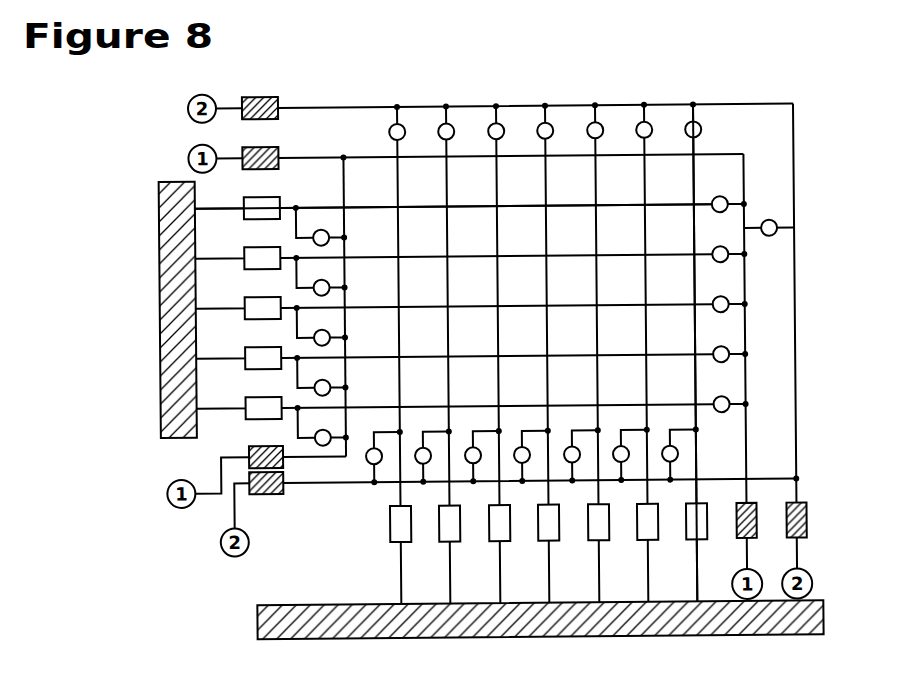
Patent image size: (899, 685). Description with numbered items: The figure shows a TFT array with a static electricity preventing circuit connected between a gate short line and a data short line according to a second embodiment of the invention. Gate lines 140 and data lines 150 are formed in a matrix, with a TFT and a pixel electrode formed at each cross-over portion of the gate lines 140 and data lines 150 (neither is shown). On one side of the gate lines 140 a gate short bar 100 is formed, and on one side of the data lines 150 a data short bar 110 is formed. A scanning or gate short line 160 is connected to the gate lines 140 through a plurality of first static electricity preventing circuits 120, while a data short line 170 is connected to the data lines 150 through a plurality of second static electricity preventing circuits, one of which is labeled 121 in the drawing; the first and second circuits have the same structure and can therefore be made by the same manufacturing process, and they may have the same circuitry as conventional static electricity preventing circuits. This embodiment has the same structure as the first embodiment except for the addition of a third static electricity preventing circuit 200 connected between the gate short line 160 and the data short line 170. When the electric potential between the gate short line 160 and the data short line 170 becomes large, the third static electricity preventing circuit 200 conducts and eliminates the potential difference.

The gate short bar 100 is at (158, 310).
The data short bar 110 is at (253, 621).
The first static electricity preventing circuit 120 is at (323, 446).
The column switch 121 is at (674, 454).
The gate line 140 is at (372, 207).
The data line 150 is at (697, 182).
The gate short line 160 is at (745, 177).
The data short line 170 is at (797, 373).
The third static electricity preventing circuit 200 is at (771, 225).